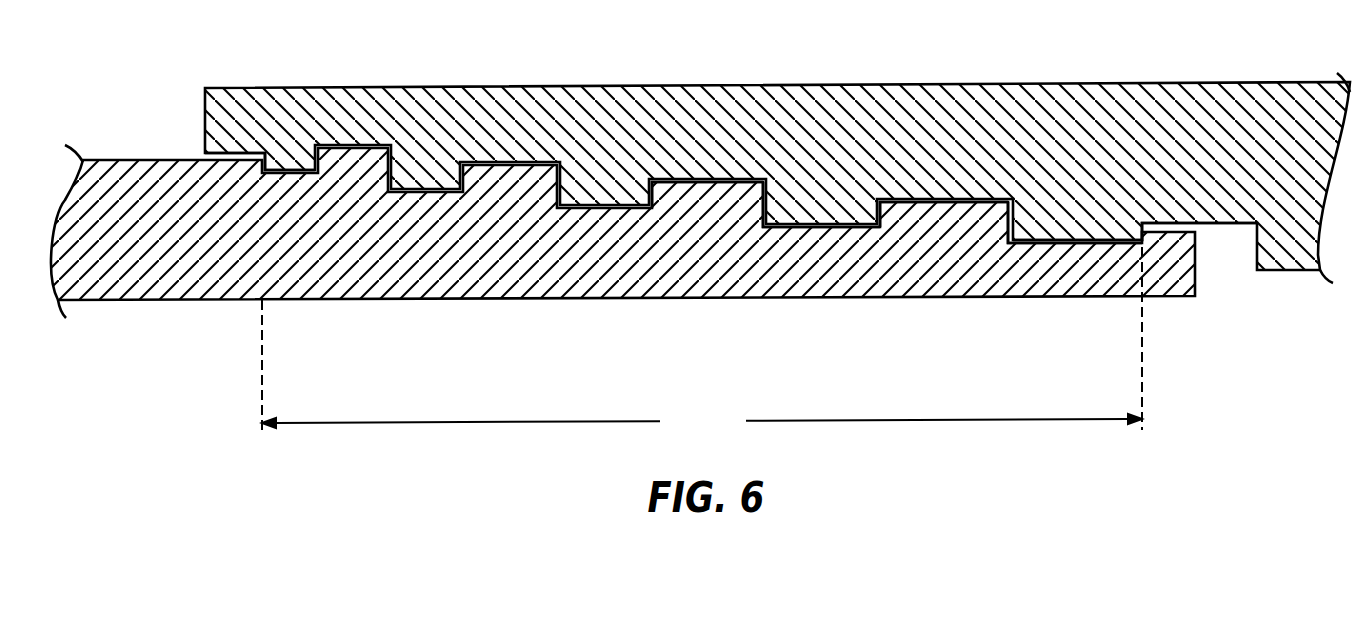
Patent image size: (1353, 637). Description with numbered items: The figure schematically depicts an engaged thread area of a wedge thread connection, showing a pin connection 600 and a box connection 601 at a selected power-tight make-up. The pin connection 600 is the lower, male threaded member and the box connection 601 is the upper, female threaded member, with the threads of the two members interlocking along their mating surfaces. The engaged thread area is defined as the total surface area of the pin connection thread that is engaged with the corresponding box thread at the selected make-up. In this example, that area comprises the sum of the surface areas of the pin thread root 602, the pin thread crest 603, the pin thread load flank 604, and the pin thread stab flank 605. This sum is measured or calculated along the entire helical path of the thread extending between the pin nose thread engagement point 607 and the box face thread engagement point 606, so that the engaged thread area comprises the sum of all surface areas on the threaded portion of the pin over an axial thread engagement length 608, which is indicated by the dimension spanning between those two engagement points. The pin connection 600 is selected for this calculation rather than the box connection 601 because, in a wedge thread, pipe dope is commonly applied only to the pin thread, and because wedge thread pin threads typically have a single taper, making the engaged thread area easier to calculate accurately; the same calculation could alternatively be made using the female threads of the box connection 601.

The pin connection 600 is at (188, 282).
The box connection 601 is at (1216, 134).
The pin thread root 602 is at (817, 233).
The pin thread crest 603 is at (704, 188).
The pin thread load flank 604 is at (882, 210).
The pin thread stab flank 605 is at (1005, 220).
The box face thread engagement point 606 is at (261, 152).
The pin nose thread engagement point 607 is at (1128, 215).
The axial thread engagement length 608 is at (702, 344).